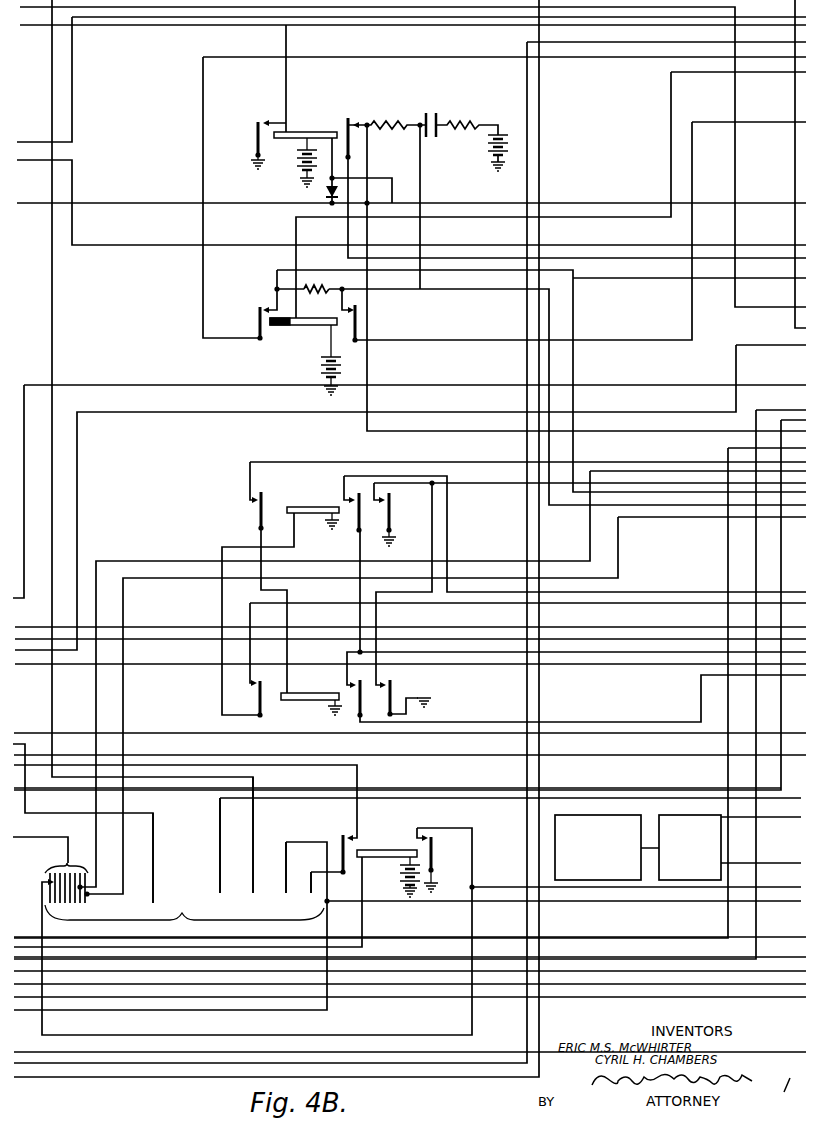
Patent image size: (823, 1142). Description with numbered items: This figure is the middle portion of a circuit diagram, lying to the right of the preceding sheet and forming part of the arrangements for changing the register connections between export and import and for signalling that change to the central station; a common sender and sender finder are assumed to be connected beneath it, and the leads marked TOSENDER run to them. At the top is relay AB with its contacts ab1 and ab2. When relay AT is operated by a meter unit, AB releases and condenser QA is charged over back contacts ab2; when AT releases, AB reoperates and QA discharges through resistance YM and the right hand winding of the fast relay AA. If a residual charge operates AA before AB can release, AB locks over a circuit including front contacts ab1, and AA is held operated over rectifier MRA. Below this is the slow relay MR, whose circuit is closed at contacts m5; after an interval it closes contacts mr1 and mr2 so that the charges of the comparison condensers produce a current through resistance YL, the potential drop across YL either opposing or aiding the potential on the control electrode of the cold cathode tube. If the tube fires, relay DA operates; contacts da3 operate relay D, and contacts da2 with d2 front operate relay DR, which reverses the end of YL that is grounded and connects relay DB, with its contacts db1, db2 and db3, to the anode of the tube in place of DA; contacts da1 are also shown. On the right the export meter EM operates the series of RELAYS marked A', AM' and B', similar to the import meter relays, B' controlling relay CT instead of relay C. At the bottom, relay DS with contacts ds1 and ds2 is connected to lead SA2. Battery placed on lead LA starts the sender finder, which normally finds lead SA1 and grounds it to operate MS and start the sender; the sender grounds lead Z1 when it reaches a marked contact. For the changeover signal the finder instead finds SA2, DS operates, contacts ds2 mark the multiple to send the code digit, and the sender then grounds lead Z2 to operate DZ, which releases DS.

The relay AB is at (305, 150).
The contacts ab1 is at (263, 145).
The contacts ab2 is at (354, 139).
The resistance YM is at (384, 113).
The condenser QA is at (462, 133).
The rectifier MRA is at (338, 177).
The resistance YL is at (316, 281).
The relay MR is at (305, 347).
The contacts mr1 is at (265, 326).
The contacts mr2 is at (349, 326).
The relay DA is at (313, 508).
The contacts da1 is at (267, 513).
The contacts da2 is at (366, 514).
The contacts da3 is at (394, 519).
The relay DB is at (311, 695).
The contacts db1 is at (267, 700).
The contacts db2 is at (367, 699).
The contacts db3 is at (397, 698).
The relay DS is at (388, 864).
The contacts ds1 is at (348, 855).
The contacts ds2 is at (435, 864).
The export meter EM is at (614, 813).
The relays A', AM', B' RELAYS is at (690, 847).
The lead SA1 is at (150, 864).
The lead SA2 is at (212, 857).
The lead Z1 is at (253, 846).
The lead LA is at (280, 879).
The lead Z2 is at (306, 894).
The connection to sender TOSENDER is at (184, 901).